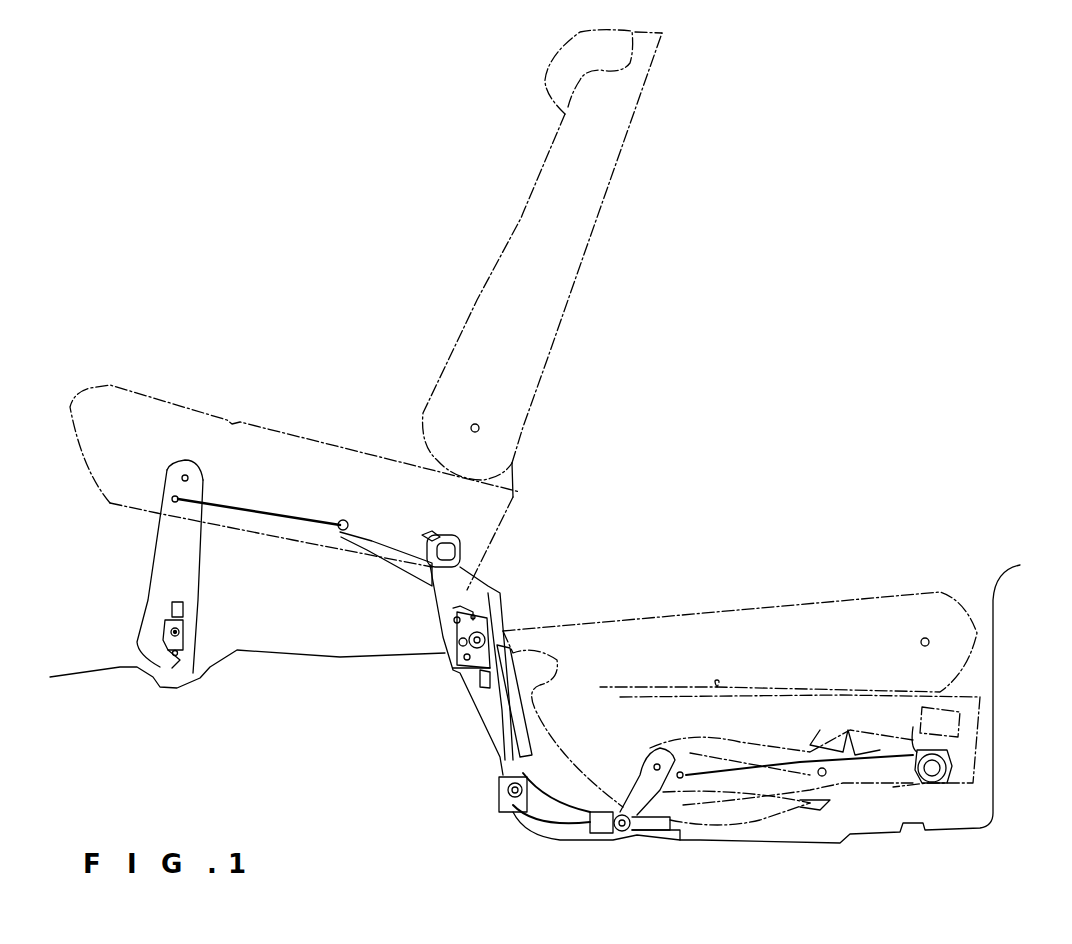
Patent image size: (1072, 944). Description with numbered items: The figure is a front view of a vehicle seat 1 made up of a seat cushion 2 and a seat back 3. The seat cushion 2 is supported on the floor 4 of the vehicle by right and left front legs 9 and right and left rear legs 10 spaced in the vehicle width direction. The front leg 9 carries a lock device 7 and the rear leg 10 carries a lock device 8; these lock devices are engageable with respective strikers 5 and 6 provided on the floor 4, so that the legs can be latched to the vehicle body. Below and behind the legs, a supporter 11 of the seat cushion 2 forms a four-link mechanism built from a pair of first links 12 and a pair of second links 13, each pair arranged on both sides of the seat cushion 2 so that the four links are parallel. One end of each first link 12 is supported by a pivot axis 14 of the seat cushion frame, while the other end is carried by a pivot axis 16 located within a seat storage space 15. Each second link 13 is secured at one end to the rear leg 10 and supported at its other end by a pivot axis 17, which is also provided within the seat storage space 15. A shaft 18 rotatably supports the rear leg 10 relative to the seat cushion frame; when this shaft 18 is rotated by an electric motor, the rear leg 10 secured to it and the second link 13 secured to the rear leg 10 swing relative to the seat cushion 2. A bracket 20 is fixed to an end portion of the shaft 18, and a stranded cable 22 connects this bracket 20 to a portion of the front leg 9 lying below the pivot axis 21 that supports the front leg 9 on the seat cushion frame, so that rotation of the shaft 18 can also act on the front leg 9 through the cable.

The vehicle seat 1 is at (312, 283).
The seat cushion 2 is at (148, 393).
The seat back 3 is at (604, 202).
The floor 4 is at (90, 672).
The striker 5 is at (173, 660).
The striker 6 is at (455, 670).
The lock device 7 is at (187, 637).
The lock device 8 is at (440, 627).
The front leg 9 is at (203, 573).
The rear leg 10 is at (492, 583).
The supporter 11 is at (520, 717).
The first link 12 is at (402, 573).
The second link 13 is at (552, 790).
The pivot axis 14 is at (343, 520).
The seat storage space 15 is at (993, 620).
The pivot axis 16 is at (497, 795).
The pivot axis 17 is at (622, 830).
The shaft 18 is at (462, 550).
The bracket 20 is at (430, 537).
The pivot axis 21 is at (192, 477).
The stranded cable 22 is at (305, 510).